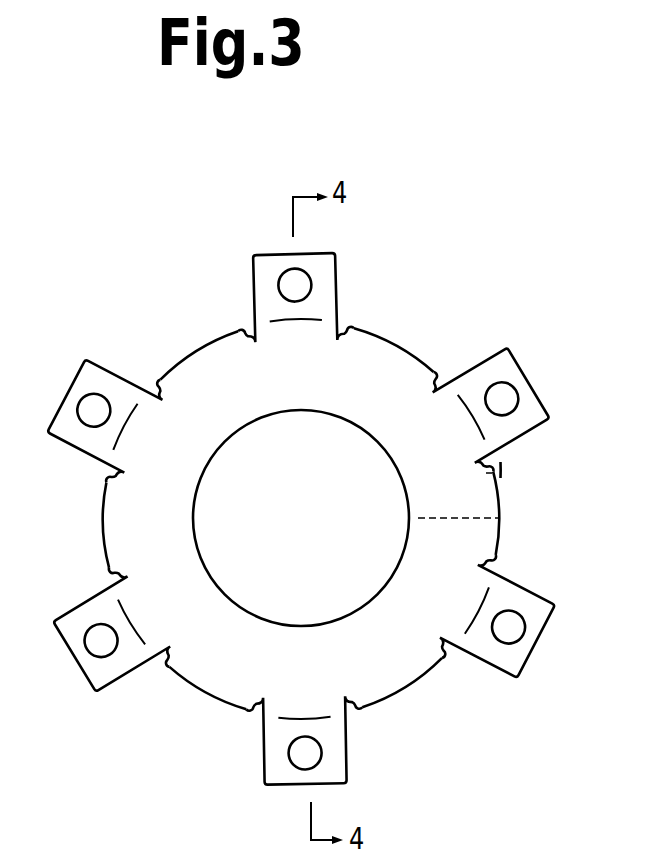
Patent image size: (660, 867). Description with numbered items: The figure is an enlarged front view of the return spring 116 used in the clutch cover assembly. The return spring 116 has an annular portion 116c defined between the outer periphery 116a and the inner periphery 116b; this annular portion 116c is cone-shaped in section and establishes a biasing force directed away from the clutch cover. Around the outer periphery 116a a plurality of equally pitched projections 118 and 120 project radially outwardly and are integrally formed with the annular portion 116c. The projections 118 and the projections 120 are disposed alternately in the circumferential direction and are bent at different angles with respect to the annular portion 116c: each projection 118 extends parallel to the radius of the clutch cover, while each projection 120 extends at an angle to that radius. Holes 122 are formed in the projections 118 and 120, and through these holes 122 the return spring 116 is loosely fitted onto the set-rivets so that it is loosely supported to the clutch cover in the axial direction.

The return spring 116 is at (486, 265).
The outer periphery 116a is at (405, 343).
The inner periphery 116b is at (505, 523).
The annular portion 116c is at (505, 468).
The projections 118 is at (338, 484).
The projections 120 is at (522, 380).
The holes 122 is at (321, 253).